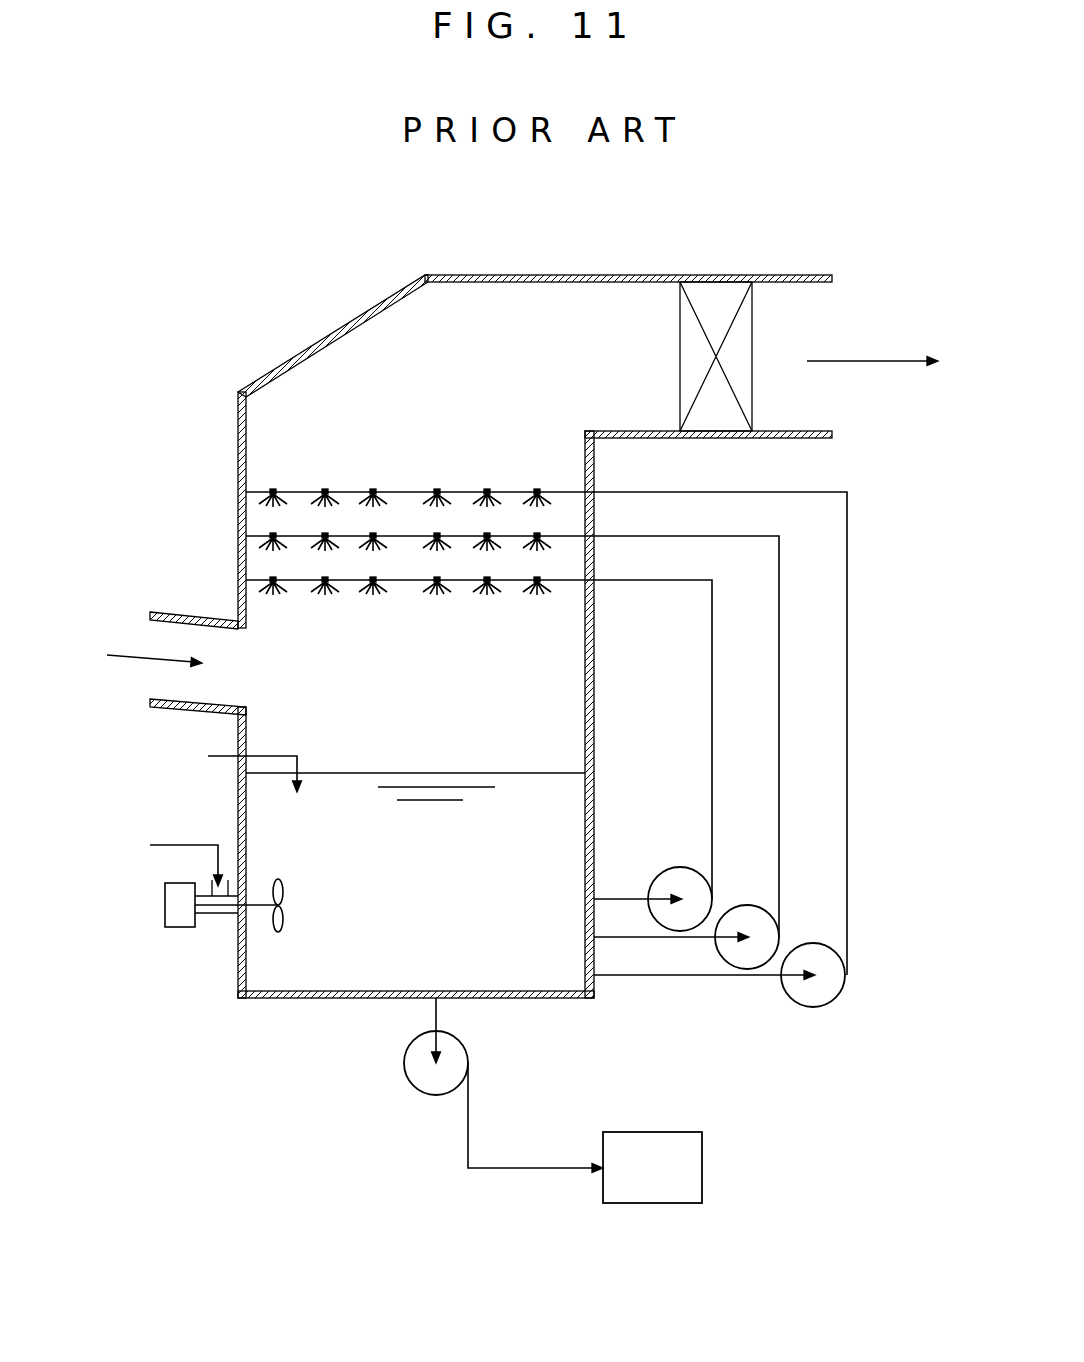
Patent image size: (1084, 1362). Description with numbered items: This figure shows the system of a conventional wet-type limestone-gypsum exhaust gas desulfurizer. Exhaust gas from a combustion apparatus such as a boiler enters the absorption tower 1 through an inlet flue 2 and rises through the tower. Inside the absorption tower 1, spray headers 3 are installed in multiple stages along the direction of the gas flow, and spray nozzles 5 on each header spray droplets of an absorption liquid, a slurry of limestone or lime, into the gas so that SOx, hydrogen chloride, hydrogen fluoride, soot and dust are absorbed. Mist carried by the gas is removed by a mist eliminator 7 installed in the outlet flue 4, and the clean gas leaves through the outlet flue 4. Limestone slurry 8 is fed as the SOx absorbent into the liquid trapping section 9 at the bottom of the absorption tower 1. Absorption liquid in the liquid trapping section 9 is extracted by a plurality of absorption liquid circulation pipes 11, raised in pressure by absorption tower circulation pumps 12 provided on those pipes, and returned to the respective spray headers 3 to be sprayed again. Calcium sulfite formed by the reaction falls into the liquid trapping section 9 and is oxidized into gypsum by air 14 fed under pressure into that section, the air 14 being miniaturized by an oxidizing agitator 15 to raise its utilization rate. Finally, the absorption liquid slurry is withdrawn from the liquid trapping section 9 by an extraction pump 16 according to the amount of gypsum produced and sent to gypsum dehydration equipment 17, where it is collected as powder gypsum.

The absorption tower 1 is at (237, 430).
The inlet flue 2 is at (169, 683).
The spray headers 3 is at (459, 490).
The outlet flue 4 is at (805, 305).
The spray nozzles 5 is at (322, 490).
The mist eliminator 7 is at (713, 292).
The limestone slurry 8 is at (225, 757).
The liquid trapping section 9 is at (307, 975).
The absorption liquid circulation pipes 11 is at (850, 612).
The absorption tower circulation pumps 12 is at (822, 1005).
The air 14 is at (163, 845).
The oxidizing agitator 15 is at (165, 907).
The extraction pump 16 is at (417, 1063).
The gypsum dehydration equipment 17 is at (635, 1132).